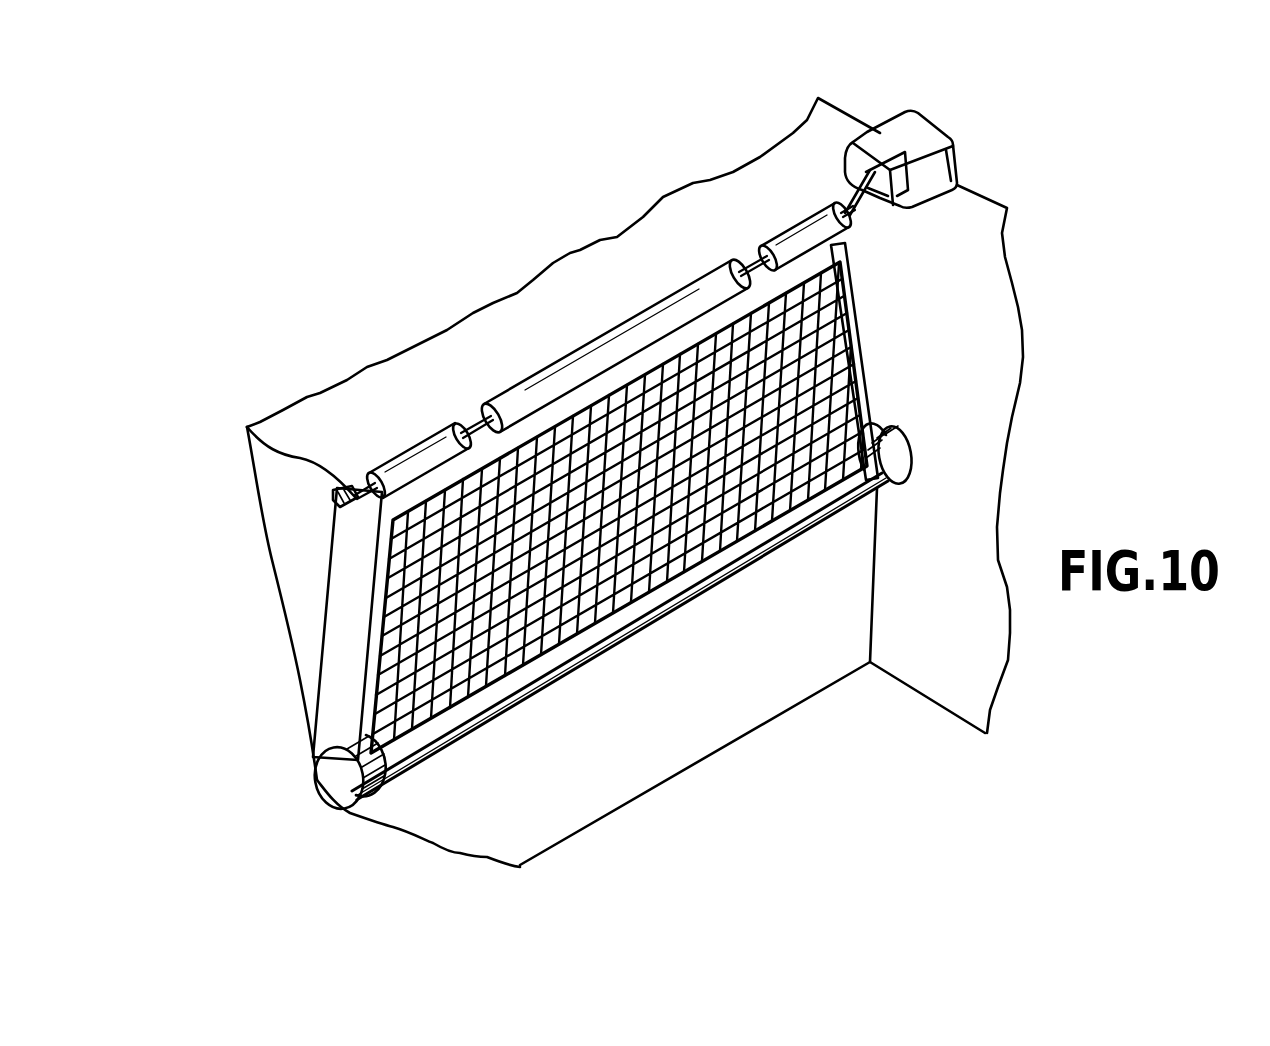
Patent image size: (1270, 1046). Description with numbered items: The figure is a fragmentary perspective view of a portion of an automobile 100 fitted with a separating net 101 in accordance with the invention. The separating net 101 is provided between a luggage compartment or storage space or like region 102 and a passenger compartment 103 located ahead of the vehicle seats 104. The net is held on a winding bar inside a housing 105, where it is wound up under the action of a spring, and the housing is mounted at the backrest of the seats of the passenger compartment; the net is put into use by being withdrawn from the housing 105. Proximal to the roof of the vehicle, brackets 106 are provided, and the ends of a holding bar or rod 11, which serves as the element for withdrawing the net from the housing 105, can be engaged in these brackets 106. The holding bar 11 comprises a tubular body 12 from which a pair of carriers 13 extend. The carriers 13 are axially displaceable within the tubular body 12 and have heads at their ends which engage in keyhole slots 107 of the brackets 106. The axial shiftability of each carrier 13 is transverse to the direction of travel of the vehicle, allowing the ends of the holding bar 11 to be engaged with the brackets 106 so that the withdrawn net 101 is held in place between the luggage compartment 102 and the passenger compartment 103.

The automobile 100 is at (1000, 187).
The separating net 101 is at (838, 361).
The luggage compartment 102 is at (873, 767).
The passenger compartment 103 is at (306, 577).
The vehicle seats 104 is at (450, 830).
The housing 105 is at (343, 812).
The brackets 106 is at (945, 190).
The keyhole slots 107 is at (922, 208).
The holding bar 11 is at (568, 353).
The tubular body 12 is at (417, 437).
The carriers 13 is at (848, 205).